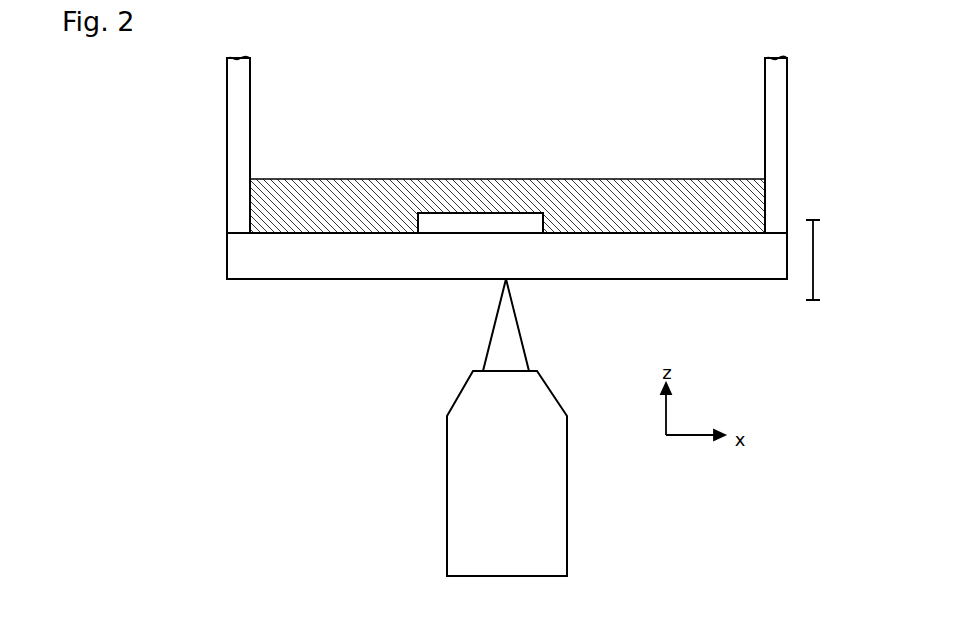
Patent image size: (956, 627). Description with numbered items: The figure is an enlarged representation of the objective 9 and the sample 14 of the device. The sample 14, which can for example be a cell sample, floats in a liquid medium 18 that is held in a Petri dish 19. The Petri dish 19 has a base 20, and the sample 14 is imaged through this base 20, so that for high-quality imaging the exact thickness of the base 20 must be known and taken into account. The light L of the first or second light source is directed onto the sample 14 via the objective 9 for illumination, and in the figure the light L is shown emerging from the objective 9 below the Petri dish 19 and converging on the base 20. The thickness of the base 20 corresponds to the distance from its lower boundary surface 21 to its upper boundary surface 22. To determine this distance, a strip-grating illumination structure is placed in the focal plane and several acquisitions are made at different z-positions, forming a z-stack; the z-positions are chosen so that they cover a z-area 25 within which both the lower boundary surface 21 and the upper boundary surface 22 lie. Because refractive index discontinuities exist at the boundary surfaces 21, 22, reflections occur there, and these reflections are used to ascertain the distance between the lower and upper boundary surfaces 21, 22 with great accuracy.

The Petri dish 19 is at (227, 153).
The base 20 is at (669, 268).
The lower boundary surface 21 is at (303, 279).
The upper boundary surface 22 is at (347, 233).
The liquid medium 18 is at (334, 188).
The sample 14 is at (500, 213).
The z-area 25 is at (813, 250).
The light L is at (523, 331).
The objective 9 is at (567, 473).